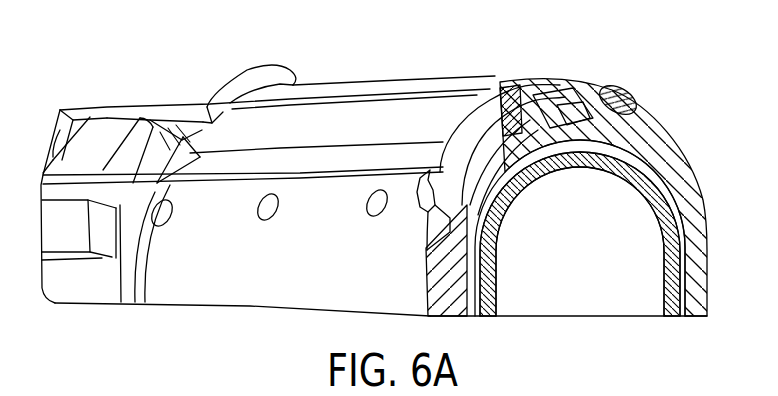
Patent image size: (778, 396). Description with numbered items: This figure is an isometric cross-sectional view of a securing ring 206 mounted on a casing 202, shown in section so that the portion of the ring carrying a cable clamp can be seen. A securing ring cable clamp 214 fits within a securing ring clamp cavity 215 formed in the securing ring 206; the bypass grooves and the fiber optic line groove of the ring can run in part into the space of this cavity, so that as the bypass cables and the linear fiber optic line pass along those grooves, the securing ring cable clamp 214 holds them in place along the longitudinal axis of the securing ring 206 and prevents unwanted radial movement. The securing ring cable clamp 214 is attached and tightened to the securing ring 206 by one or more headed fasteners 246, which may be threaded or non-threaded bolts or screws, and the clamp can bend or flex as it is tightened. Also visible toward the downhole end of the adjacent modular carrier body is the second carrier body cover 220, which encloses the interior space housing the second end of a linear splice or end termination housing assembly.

The second carrier body cover 220 is at (77, 117).
The headed fasteners 246 is at (530, 84).
The securing ring cable clamp 214 is at (553, 83).
The securing ring clamp cavity 215 is at (610, 90).
The securing ring 206 is at (648, 120).
The casing 202 is at (665, 155).